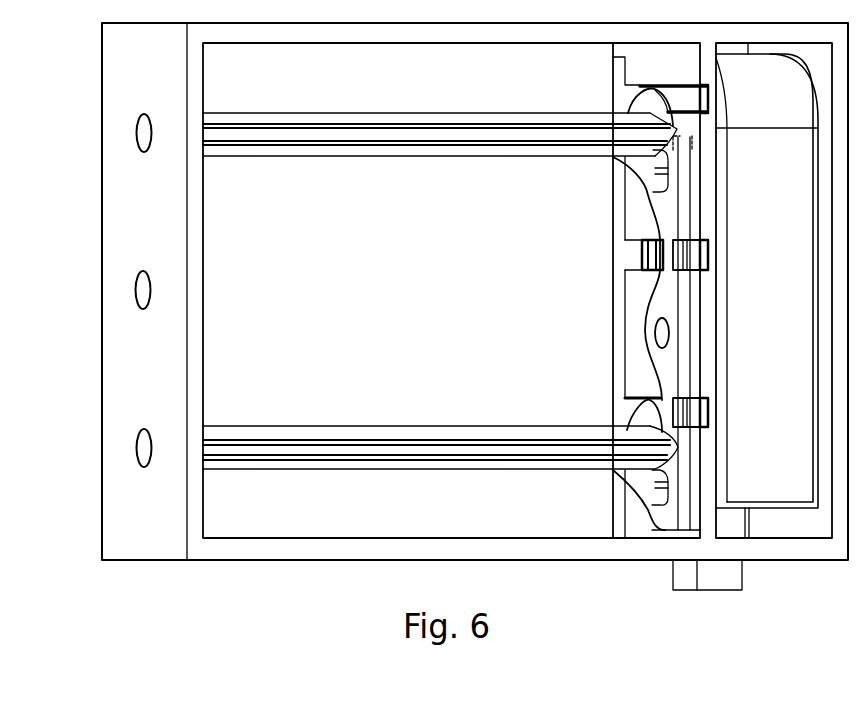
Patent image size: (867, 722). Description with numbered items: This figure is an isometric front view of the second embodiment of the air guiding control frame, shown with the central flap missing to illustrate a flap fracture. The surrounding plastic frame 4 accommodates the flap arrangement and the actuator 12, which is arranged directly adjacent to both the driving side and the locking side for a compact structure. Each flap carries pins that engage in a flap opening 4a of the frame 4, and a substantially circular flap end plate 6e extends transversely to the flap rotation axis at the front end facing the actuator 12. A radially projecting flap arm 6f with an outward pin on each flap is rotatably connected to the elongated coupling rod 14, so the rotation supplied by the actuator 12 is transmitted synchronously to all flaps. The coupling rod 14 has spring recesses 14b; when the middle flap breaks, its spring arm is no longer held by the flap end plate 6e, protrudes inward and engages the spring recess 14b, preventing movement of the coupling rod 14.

The frame 4 is at (210, 580).
The flap opening 4a is at (136, 117).
The flap end plate 6e is at (637, 100).
The flap arm 6f is at (637, 172).
The actuator 12 is at (787, 528).
The coupling rod 14 is at (645, 528).
The spring recess 14b is at (678, 252).